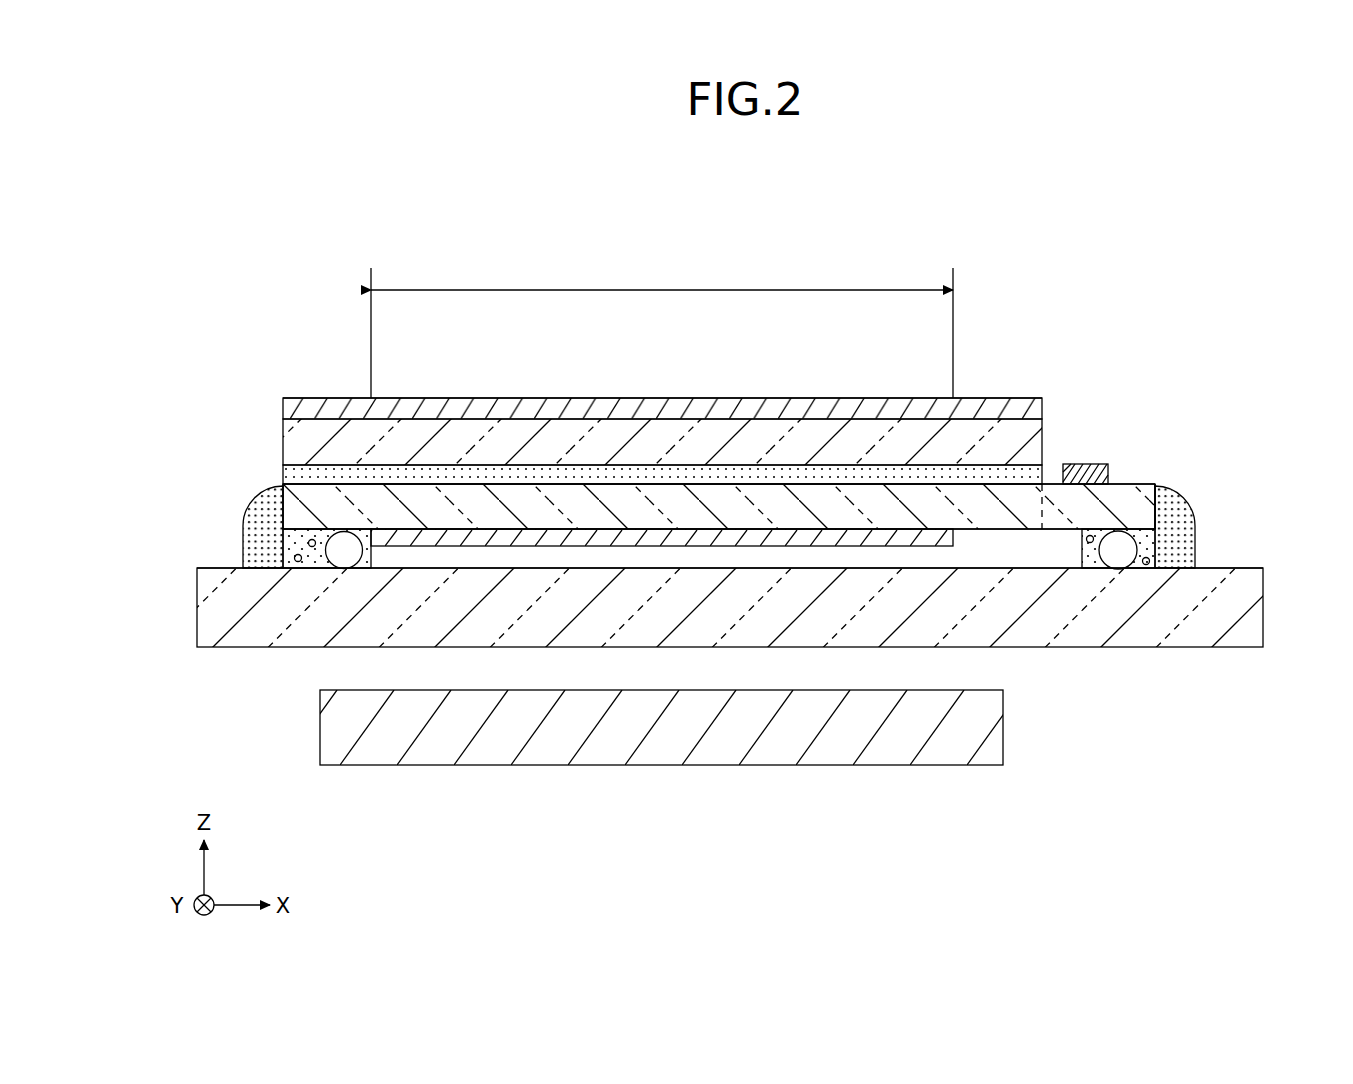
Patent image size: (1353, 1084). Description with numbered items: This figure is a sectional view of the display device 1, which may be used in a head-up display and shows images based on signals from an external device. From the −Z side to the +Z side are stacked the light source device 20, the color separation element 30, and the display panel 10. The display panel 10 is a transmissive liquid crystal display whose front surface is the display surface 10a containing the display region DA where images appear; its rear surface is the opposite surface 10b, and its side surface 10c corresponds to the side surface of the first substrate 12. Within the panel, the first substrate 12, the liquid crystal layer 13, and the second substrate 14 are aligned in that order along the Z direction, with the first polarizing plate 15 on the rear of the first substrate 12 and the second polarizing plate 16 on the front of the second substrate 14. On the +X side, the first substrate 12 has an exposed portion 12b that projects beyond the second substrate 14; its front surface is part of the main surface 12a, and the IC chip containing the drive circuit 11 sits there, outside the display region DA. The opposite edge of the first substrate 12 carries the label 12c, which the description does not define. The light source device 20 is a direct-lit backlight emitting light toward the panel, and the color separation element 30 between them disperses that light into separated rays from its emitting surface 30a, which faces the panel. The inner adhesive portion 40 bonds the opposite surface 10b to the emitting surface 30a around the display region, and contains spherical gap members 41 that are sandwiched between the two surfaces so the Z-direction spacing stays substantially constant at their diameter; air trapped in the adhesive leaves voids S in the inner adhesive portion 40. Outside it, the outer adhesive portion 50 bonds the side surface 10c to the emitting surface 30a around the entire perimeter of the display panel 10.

The display device 1 is at (276, 226).
The display panel 10 is at (718, 546).
The display surface 10a is at (1005, 398).
The opposite surface 10b is at (1012, 530).
The side surface 10c is at (1165, 515).
The drive circuit 11 is at (1088, 464).
The first substrate 12 is at (278, 497).
The main surface 12a is at (832, 484).
The exposed portion 12b is at (1157, 498).
The side surface of substrate 12c is at (266, 515).
The liquid crystal layer 13 is at (283, 474).
The second substrate 14 is at (283, 441).
The first polarizing plate 15 is at (525, 546).
The second polarizing plate 16 is at (318, 398).
The light source device 20 is at (383, 768).
The color separation element 30 is at (684, 684).
The emitting surface 30a is at (705, 568).
The inner adhesive portion 40 is at (290, 545).
The gap member 41 is at (344, 556).
The outer adhesive portion 50 is at (243, 560).
The void S is at (298, 562).
The display region DA is at (662, 332).